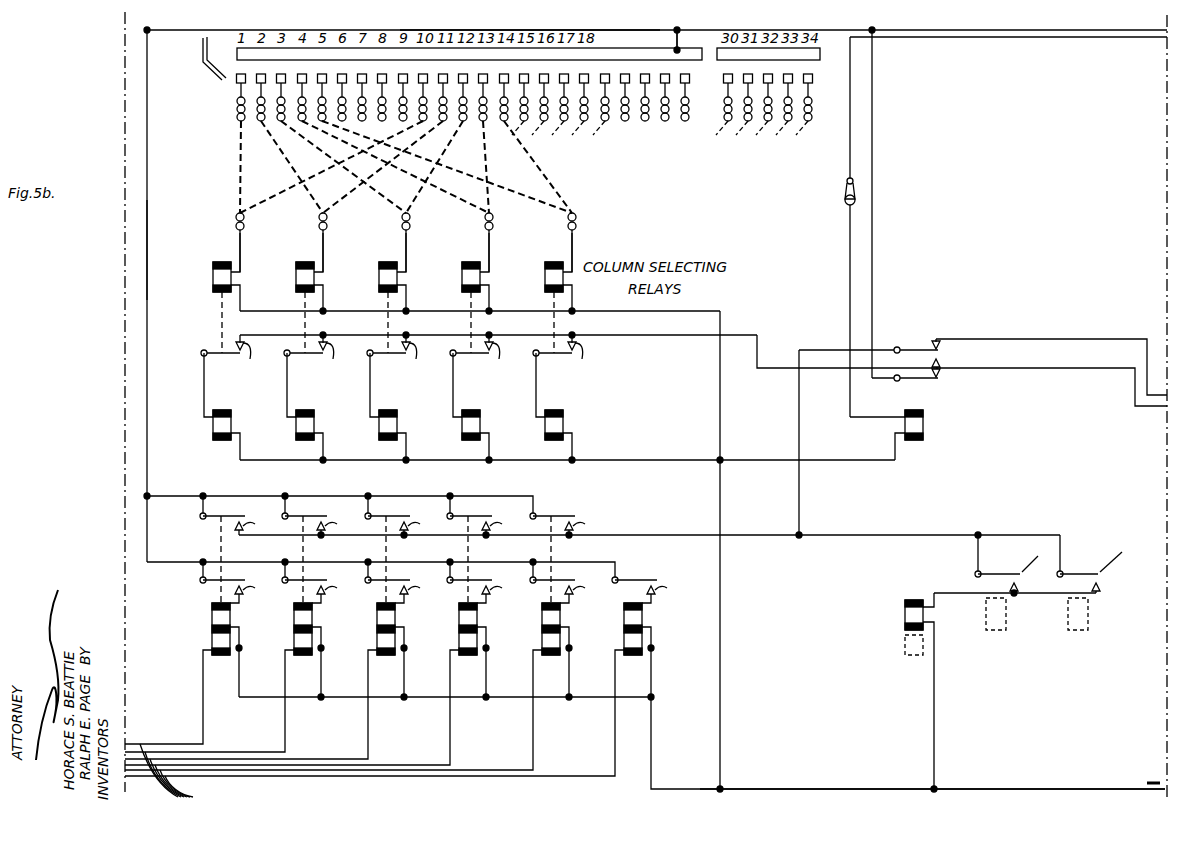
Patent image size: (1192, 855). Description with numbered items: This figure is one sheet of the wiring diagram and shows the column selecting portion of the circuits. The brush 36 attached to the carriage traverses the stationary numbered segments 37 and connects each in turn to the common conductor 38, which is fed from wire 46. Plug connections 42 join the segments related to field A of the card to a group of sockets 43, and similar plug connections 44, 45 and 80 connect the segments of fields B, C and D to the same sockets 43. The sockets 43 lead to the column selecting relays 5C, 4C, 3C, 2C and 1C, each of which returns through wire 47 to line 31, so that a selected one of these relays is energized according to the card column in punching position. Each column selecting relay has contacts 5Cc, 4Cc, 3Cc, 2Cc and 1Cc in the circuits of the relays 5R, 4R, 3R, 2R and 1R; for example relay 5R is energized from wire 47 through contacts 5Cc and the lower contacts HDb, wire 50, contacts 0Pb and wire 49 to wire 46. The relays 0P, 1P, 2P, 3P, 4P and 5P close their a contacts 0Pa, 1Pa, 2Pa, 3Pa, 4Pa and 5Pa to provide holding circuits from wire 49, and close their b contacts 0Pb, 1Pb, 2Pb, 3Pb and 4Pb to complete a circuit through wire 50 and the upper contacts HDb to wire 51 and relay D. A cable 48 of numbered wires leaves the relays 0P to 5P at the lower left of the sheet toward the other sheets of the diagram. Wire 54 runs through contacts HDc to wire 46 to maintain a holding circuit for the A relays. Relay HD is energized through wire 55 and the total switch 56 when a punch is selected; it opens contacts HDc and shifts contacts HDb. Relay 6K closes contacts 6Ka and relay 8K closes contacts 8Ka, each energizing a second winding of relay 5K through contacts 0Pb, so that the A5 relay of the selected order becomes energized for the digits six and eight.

The line 31 is at (1000, 789).
The brush 36 is at (203, 56).
The numbered segments 37 is at (280, 82).
The common conductor 38 is at (688, 50).
The plug connections 42 is at (345, 130).
The sockets 43 is at (318, 222).
The plug connections 44 is at (403, 128).
The plug connections 45 is at (635, 138).
The wire 46 is at (650, 28).
The wire 47 is at (720, 585).
The cable to digit keys 48 is at (169, 777).
The wire 49 is at (147, 228).
The wire 50 is at (799, 488).
The wire 51 is at (1124, 336).
The wire 54 is at (1094, 370).
The wire 55 is at (1130, 40).
The total switch 56 is at (845, 202).
The plug connections 80 is at (790, 138).
The column selecting relay 5C is at (213, 282).
The column selecting relay 4C is at (296, 282).
The column selecting relay 3C is at (379, 282).
The column selecting relay 2C is at (462, 282).
The column selecting relay 1C is at (545, 282).
The contacts of relay 5C 5Cc is at (226, 340).
The contacts of relay 4C 4Cc is at (309, 340).
The contacts of relay 3C 3Cc is at (392, 340).
The contacts of relay 2C 2Cc is at (475, 340).
The contacts of relay 1C 1Cc is at (558, 340).
The relay 5R is at (228, 428).
The relay 4R is at (311, 428).
The relay 3R is at (394, 428).
The relay 2R is at (477, 428).
The relay 1R is at (560, 428).
The b contacts of relay 0P 0Pb is at (238, 549).
The b contacts of relay 1P 1Pb is at (320, 549).
The b contacts of relay 2P 2Pb is at (403, 549).
The b contacts of relay 3P 3Pb is at (485, 549).
The b contacts of relay 4P 4Pb is at (568, 558).
The a contacts of relay 0P 0Pa is at (238, 585).
The a contacts of relay 1P 1Pa is at (320, 585).
The a contacts of relay 2P 2Pa is at (403, 585).
The a contacts of relay 3P 3Pa is at (485, 585).
The a contacts of relay 4P 4Pa is at (568, 585).
The a contacts of relay 5P 5Pa is at (651, 593).
The relay 0P is at (212, 622).
The relay 1P is at (294, 622).
The relay 2P is at (377, 622).
The relay 3P is at (459, 622).
The relay 4P is at (542, 622).
The relay 5P is at (624, 622).
The relay 5K is at (905, 615).
The relay 6K is at (986, 616).
The relay 8K is at (1068, 616).
The contacts of relay 6K 6Ka is at (1006, 564).
The contacts of relay 8K 8Ka is at (1092, 564).
The relay HD is at (923, 426).
The contacts of relay HD HDb is at (930, 344).
The contacts of relay HD HDc is at (938, 380).